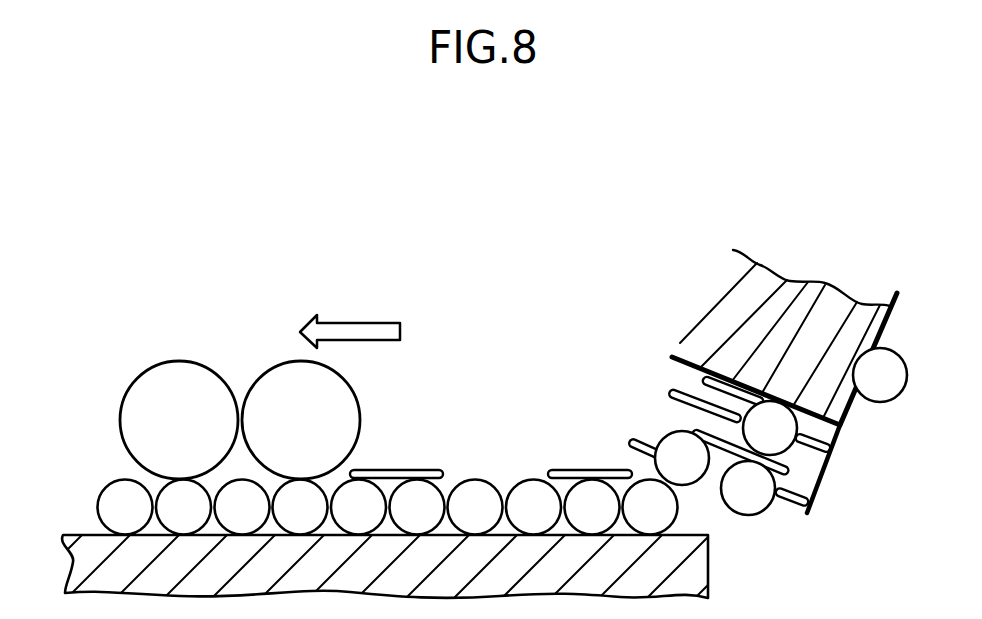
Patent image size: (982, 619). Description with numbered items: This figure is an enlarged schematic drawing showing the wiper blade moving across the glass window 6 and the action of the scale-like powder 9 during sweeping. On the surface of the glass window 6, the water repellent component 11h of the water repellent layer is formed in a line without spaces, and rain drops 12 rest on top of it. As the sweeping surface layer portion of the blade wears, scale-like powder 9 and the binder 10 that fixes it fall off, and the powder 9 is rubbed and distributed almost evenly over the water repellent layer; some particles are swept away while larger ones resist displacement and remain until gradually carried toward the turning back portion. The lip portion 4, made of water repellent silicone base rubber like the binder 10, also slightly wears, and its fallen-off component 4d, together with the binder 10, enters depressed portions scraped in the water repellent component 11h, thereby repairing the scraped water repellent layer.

The lip portion 4 is at (798, 293).
The fallen-off component of the lip portion 4d is at (881, 383).
The glass window 6 is at (697, 565).
The scale-like powder 9 is at (393, 470).
The binder 10 is at (799, 452).
The water repellent component 11h is at (112, 497).
The rain drop 12 is at (142, 402).